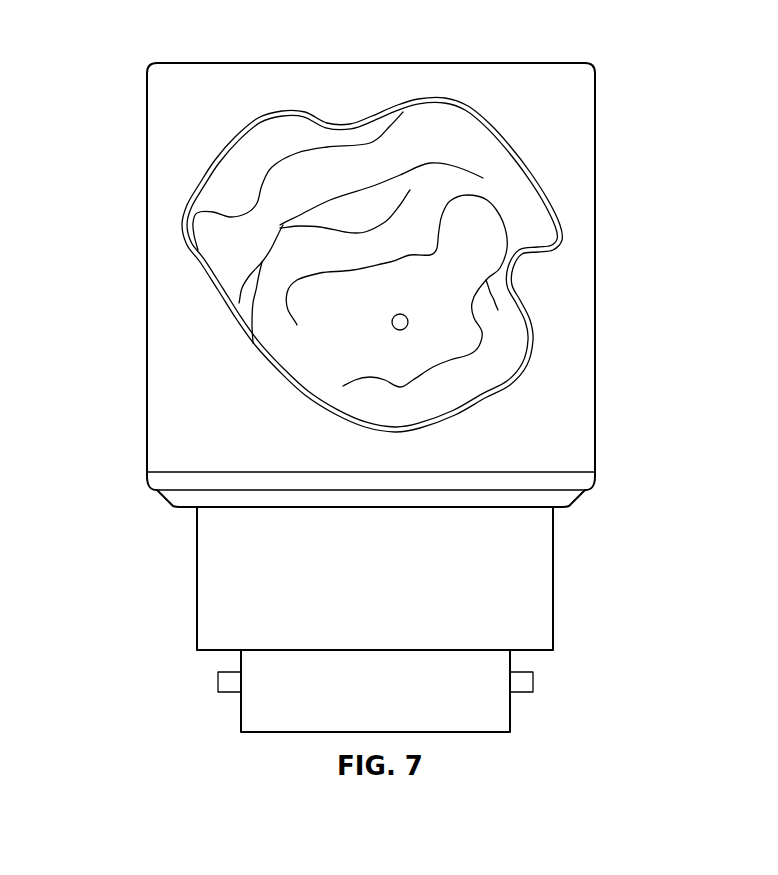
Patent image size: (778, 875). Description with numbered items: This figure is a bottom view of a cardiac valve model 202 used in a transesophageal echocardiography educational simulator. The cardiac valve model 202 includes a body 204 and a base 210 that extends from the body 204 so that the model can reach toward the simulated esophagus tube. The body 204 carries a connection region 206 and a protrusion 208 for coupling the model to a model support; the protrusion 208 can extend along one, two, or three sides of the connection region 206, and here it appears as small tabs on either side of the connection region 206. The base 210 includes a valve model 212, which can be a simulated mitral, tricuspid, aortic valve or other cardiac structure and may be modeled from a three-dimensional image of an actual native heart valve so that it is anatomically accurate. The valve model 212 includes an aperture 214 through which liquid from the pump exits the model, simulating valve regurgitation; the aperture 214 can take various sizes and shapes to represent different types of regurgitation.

The cardiac valve model 202 is at (137, 38).
The body 204 is at (538, 573).
The connection region 206 is at (465, 717).
The protrusion 208 is at (525, 681).
The base 210 is at (583, 425).
The valve model 212 is at (213, 230).
The aperture 214 is at (408, 322).